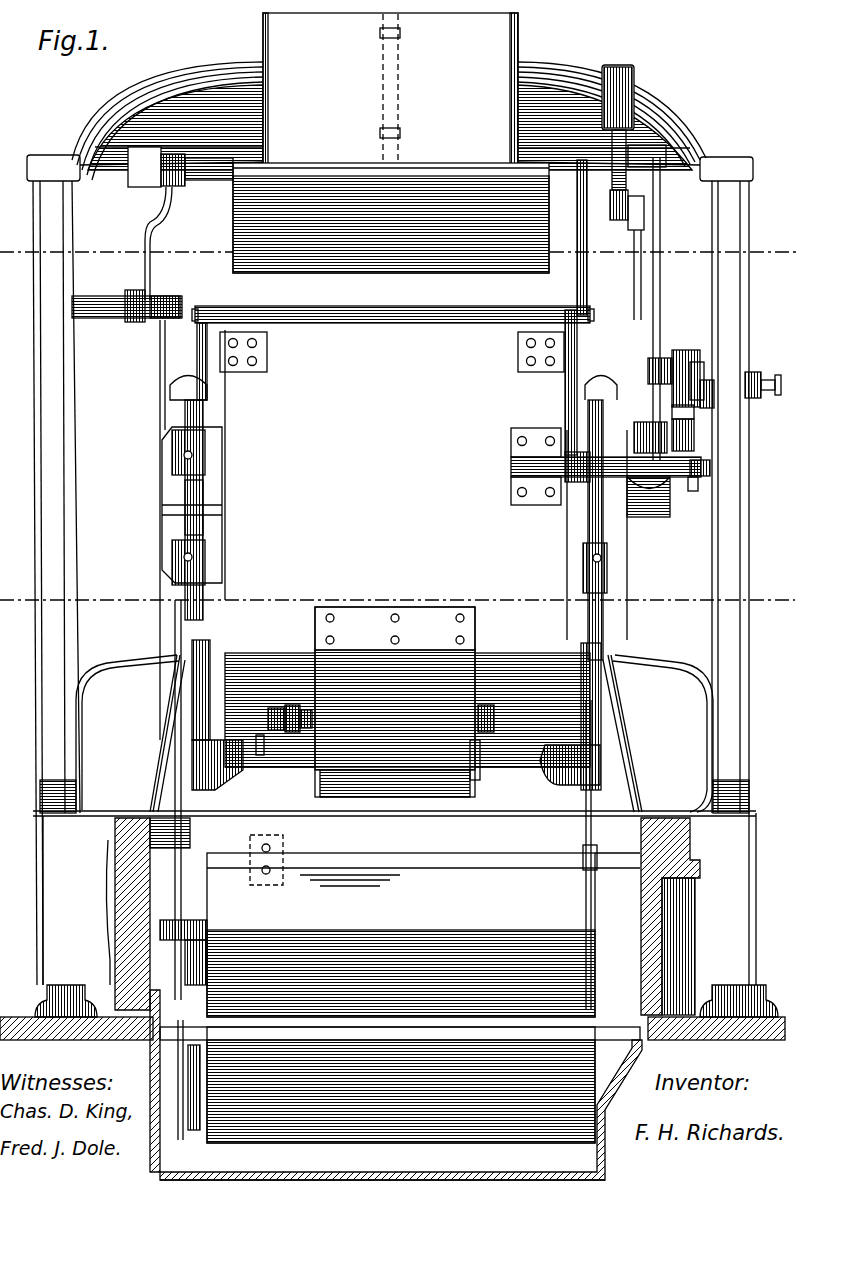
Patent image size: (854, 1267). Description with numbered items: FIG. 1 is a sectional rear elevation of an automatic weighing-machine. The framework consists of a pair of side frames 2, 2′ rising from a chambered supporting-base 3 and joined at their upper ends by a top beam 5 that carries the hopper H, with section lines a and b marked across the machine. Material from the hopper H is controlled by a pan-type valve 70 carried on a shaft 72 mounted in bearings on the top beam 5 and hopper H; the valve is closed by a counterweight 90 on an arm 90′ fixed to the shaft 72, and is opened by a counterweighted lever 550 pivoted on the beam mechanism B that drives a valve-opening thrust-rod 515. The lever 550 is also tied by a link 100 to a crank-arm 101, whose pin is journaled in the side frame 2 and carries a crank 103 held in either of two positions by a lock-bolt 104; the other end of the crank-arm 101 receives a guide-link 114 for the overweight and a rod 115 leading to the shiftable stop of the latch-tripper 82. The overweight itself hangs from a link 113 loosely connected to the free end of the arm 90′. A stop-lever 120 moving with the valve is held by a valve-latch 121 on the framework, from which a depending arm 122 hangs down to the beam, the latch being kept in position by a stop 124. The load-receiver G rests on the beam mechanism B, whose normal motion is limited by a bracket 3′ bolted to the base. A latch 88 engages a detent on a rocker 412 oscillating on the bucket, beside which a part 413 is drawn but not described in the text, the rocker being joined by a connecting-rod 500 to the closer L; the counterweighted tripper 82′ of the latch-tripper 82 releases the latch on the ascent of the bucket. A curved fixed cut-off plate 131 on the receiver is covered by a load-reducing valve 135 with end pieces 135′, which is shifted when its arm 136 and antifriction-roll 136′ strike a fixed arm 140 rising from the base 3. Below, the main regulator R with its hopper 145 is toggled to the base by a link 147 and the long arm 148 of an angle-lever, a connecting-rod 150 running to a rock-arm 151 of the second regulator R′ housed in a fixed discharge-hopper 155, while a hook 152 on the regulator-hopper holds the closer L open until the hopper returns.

The hopper H is at (390, 131).
The load-receiver G is at (426, 485).
The beam mechanism B is at (190, 506).
The closer L is at (569, 775).
The main regulator R is at (423, 926).
The second regulator R′ is at (401, 1085).
The section line a a is at (400, 253).
The section line b b is at (397, 601).
The side frame 2 is at (738, 546).
The side frame 2′ is at (42, 426).
The chambered supporting-base 3 is at (392, 998).
The bracket 3′ is at (165, 764).
The top beam 5 is at (389, 112).
The valve 70 is at (343, 268).
The shaft 72 is at (203, 181).
The latch-tripper 82 is at (706, 472).
The tripper proper 82′ is at (698, 484).
The latch 88 is at (582, 473).
The valve-closing actuator 90 is at (623, 66).
The arm 90′ is at (618, 221).
The link 100 is at (680, 352).
The crank-arm 101 is at (703, 372).
The crank 103 is at (756, 396).
The lock-bolt 104 is at (749, 372).
The link 113 is at (637, 272).
The guide-link 114 is at (692, 418).
The rod 115 is at (692, 440).
The stop-lever 120 is at (146, 229).
The valve-latch 121 is at (146, 323).
The depending arm 122 is at (166, 367).
The stop 124 is at (127, 291).
The cut-off plate 131 is at (383, 797).
The load-reducing valve 135 is at (415, 790).
The end pieces 135′ is at (306, 790).
The arm 136 is at (302, 712).
The antifriction-roll 136′ is at (277, 708).
The fixed arm 140 is at (268, 791).
The regulator-hopper 145 is at (356, 868).
The link 147 is at (179, 870).
The long arm 148 is at (196, 958).
The connecting-rod 150 is at (180, 1061).
The rock-arm 151 is at (196, 1104).
The hook 152 is at (592, 833).
The discharge-hopper 155 is at (382, 1167).
The rocker 412 is at (580, 349).
The vertical strip 413 is at (577, 272).
The connecting-rod 500 is at (183, 441).
The valve-opening thrust-rod 515 is at (656, 290).
The counterweighted lever 550 is at (640, 443).